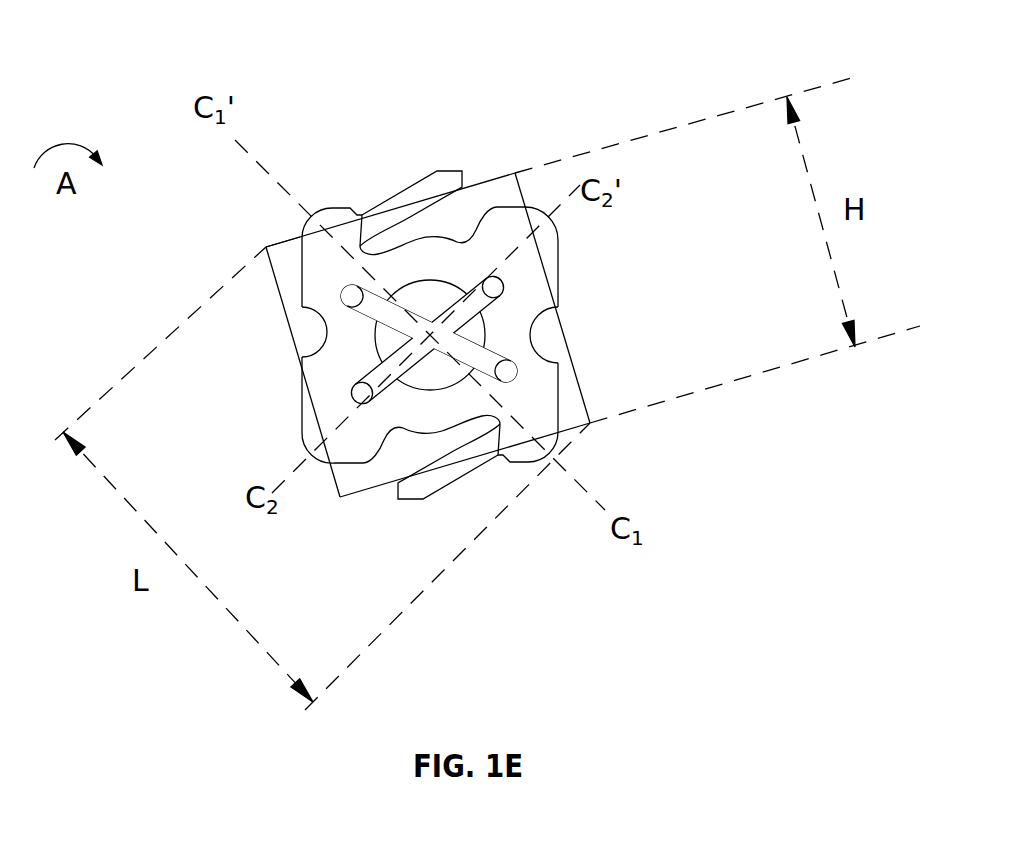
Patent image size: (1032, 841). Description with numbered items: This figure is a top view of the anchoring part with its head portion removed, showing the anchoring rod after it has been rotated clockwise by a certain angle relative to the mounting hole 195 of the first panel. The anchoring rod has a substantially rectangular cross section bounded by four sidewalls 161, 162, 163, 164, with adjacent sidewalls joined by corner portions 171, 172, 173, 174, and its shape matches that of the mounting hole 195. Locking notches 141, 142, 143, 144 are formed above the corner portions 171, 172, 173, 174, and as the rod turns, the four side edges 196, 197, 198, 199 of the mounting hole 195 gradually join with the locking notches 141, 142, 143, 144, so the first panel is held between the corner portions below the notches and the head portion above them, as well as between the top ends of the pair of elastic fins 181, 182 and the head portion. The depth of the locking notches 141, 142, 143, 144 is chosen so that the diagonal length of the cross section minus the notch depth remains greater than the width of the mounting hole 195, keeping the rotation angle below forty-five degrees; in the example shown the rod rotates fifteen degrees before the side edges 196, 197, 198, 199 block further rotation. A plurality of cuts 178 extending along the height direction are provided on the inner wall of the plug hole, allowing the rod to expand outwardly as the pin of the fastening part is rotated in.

The locking notch 141 is at (362, 210).
The corner portion 171 is at (330, 212).
The locking notch 142 is at (596, 196).
The corner portion 172 is at (551, 214).
The locking notch 143 is at (555, 495).
The corner portion 173 is at (520, 465).
The locking notch 144 is at (252, 461).
The corner portion 174 is at (305, 440).
The sidewall 161 is at (457, 232).
The sidewall 162 is at (558, 290).
The sidewall 163 is at (423, 437).
The sidewall 164 is at (302, 372).
The cuts 178 is at (487, 350).
The elastic fin 181 is at (434, 170).
The elastic fin 182 is at (421, 500).
The mounting hole 195 is at (517, 170).
The side edge 196 is at (266, 246).
The side edge 197 is at (280, 292).
The side edge 198 is at (590, 425).
The side edge 199 is at (582, 392).